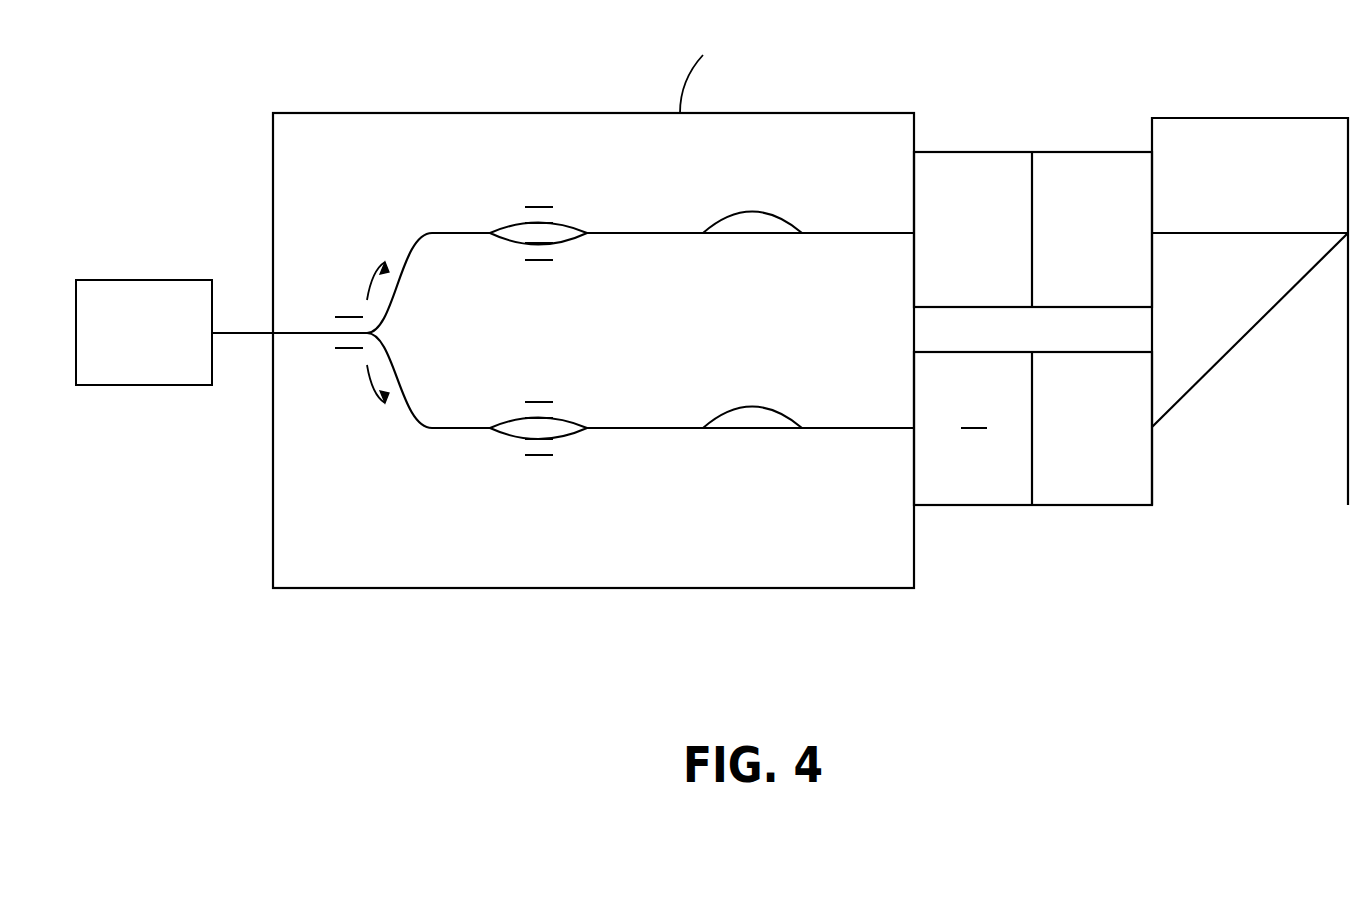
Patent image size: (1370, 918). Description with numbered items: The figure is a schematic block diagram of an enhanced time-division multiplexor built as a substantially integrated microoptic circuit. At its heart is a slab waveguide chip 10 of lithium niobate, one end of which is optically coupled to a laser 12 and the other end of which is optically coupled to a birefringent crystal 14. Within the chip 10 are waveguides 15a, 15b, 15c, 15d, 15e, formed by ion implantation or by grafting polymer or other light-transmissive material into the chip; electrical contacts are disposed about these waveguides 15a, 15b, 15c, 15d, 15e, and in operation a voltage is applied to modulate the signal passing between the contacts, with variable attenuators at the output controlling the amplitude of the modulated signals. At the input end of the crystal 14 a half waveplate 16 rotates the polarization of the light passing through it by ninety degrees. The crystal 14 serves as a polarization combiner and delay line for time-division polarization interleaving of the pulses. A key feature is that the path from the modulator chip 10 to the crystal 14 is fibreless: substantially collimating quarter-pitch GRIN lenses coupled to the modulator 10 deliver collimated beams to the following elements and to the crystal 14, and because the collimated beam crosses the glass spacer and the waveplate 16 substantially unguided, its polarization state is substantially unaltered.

The slab waveguide chip 10 is at (563, 350).
The laser 12 is at (152, 280).
The birefringent crystal 14 is at (1232, 487).
The waveguide 15a is at (348, 312).
The waveguide 15b is at (553, 207).
The waveguide 15c is at (548, 260).
The waveguide 15d is at (553, 402).
The waveguide 15e is at (538, 457).
The half waveplate 16 is at (968, 507).